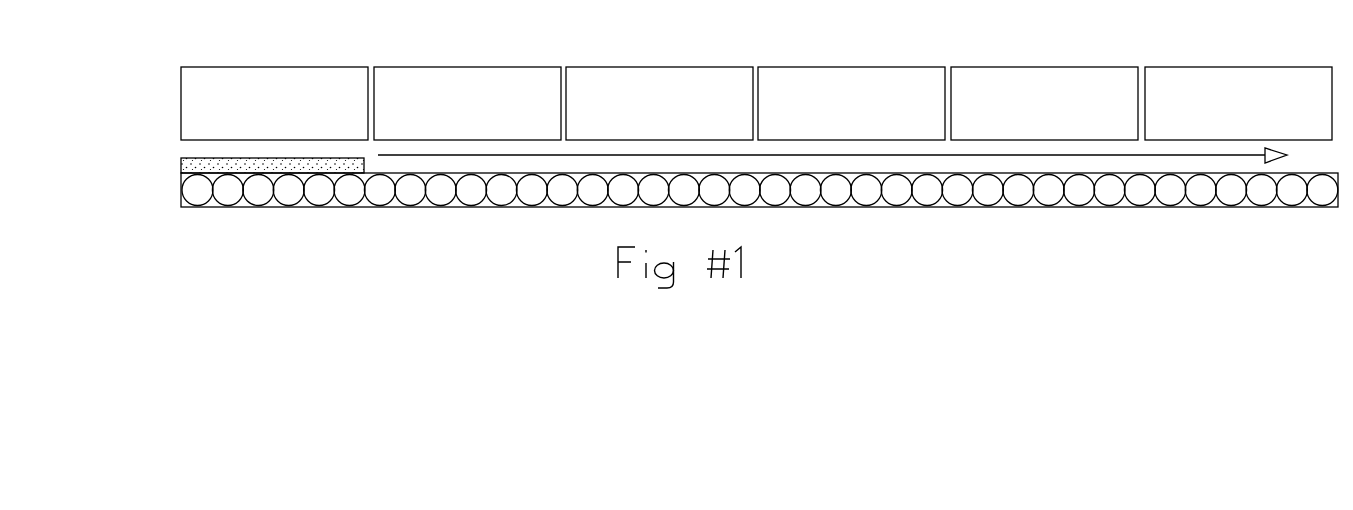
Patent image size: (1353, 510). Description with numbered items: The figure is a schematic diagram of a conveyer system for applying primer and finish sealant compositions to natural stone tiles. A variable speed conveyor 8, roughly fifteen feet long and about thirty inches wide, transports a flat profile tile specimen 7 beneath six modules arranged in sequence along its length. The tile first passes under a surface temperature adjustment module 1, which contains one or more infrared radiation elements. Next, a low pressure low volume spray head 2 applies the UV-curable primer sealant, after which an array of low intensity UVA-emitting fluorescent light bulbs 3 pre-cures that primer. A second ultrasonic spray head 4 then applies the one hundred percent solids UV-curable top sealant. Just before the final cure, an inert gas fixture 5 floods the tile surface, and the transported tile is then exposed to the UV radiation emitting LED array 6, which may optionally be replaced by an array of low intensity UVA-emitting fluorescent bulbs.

The surface temperature adjustment module 1 is at (277, 108).
The low pressure low volume spray head 2 is at (467, 103).
The array of low intensity UVA-emitting fluorescent light bulbs 3 is at (659, 103).
The second ultrasonic spray head 4 is at (851, 103).
The inert gas fixture 5 is at (1044, 103).
The UV radiation emitting LED array 6 is at (1238, 103).
The flat profile tile specimen 7 is at (183, 162).
The variable speed conveyor 8 is at (428, 207).